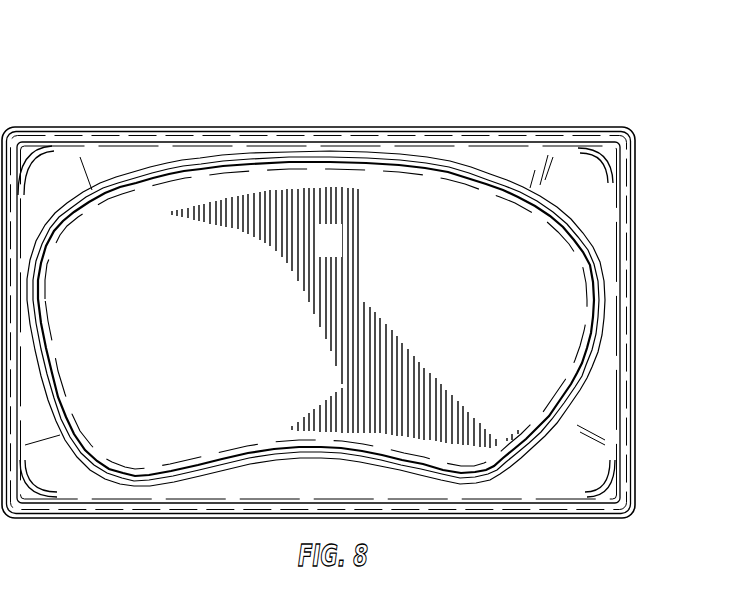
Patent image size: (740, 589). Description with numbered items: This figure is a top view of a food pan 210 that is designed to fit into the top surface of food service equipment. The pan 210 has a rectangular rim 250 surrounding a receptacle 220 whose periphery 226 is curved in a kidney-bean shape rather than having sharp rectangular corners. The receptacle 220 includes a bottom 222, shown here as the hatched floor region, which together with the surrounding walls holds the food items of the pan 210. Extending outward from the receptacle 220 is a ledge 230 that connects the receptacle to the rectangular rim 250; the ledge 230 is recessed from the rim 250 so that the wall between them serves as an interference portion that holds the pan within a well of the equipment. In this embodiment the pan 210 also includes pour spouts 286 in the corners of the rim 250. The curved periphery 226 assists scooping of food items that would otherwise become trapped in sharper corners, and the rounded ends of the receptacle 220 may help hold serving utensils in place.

The pan 210 is at (161, 97).
The receptacle 220 is at (362, 257).
The bottom 222 is at (263, 334).
The periphery 226 is at (577, 285).
The ledge 230 is at (50, 190).
The rectangular rim 250 is at (308, 126).
The pour spout 286 is at (605, 150).